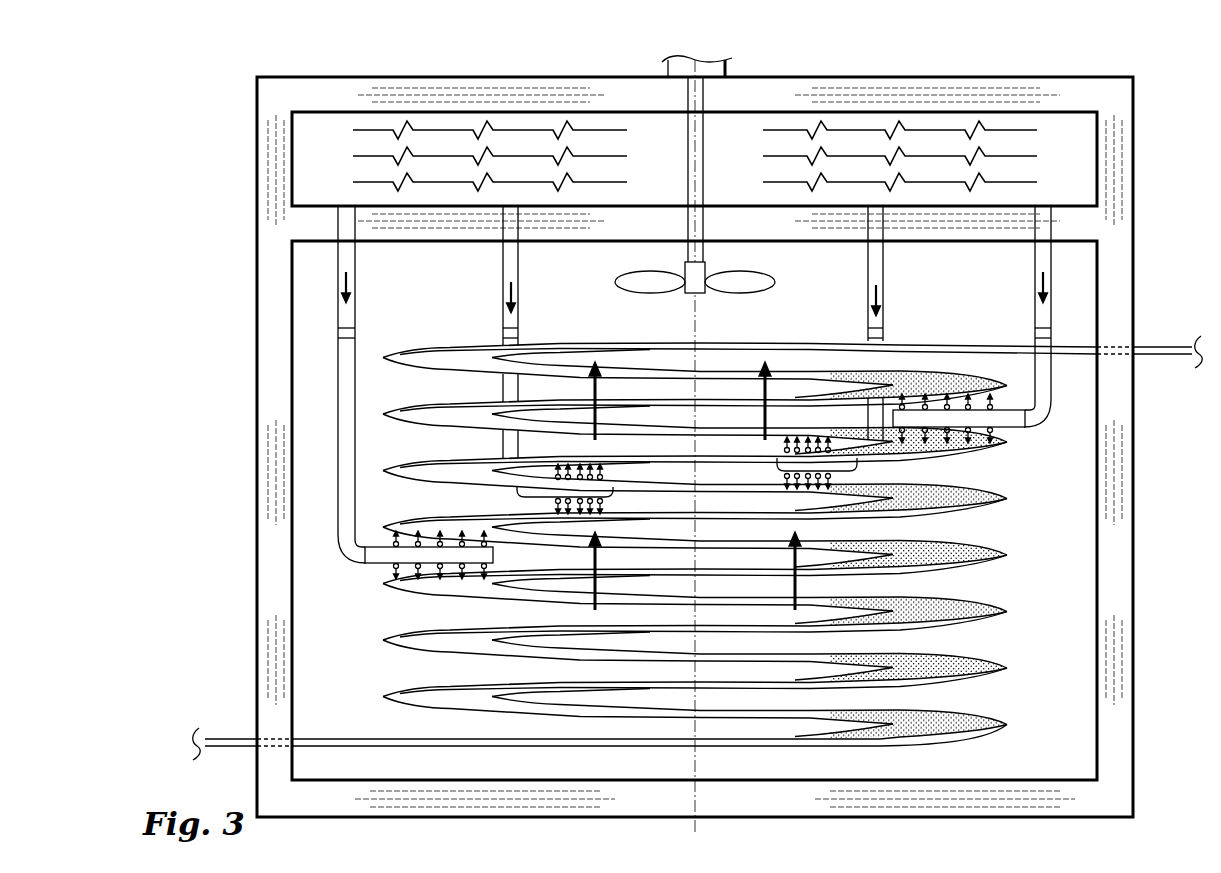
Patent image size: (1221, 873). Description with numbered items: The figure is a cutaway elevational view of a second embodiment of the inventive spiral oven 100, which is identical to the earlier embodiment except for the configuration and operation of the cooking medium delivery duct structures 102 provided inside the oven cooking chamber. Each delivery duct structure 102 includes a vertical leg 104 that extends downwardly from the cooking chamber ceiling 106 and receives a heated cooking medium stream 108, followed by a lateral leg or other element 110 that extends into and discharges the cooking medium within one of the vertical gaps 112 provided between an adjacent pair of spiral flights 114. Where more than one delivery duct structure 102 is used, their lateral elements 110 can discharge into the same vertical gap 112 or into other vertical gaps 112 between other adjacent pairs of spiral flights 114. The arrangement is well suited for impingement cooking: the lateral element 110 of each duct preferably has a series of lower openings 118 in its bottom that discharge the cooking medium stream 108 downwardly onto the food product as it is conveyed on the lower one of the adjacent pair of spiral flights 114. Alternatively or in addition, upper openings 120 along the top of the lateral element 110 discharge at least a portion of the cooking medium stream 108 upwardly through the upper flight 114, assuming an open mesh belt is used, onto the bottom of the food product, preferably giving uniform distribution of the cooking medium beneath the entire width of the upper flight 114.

The spiral oven 100 is at (244, 118).
The cooking medium delivery duct structure 102 is at (340, 322).
The vertical leg 104 is at (877, 362).
The cooking chamber ceiling 106 is at (915, 246).
The heated cooking medium stream 108 is at (348, 286).
The lateral leg 110 is at (985, 420).
The vertical gap 112 is at (855, 430).
The spiral flight 114 is at (1000, 378).
The lower opening 118 is at (988, 432).
The upper opening 120 is at (990, 406).